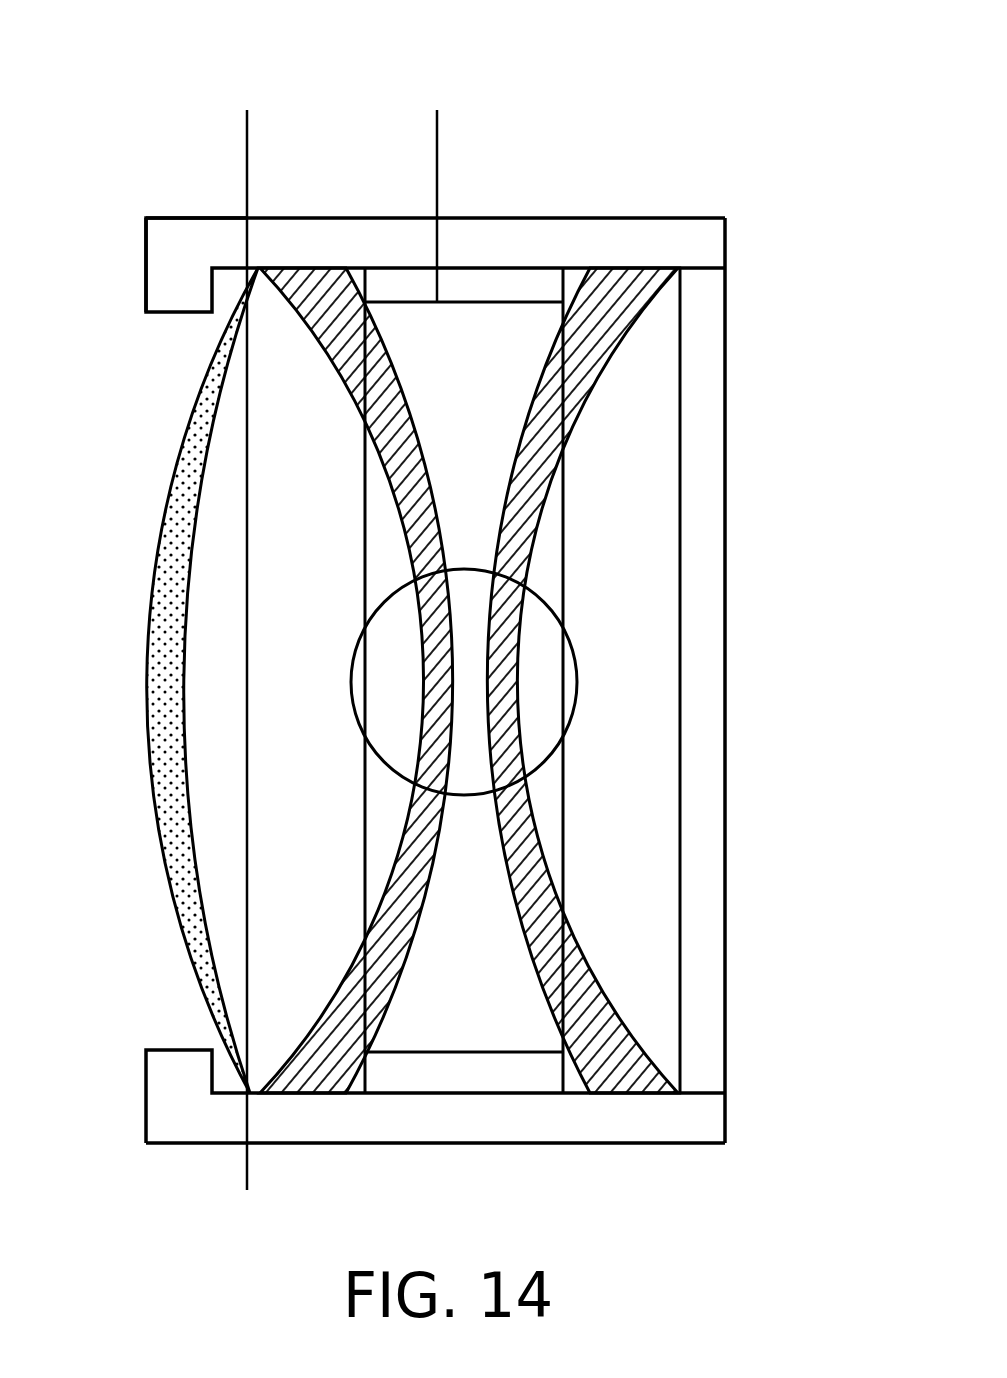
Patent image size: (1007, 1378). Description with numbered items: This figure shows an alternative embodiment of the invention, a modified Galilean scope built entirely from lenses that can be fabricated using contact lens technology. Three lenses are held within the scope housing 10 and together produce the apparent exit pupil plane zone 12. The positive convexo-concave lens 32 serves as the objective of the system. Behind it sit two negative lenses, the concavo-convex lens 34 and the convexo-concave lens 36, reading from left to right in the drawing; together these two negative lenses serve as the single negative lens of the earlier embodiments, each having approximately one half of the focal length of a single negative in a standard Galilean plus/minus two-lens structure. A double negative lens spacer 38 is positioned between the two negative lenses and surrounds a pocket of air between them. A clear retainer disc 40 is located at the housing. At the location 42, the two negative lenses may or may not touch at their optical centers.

The scope housing 10 is at (197, 213).
The apparent exit pupil plane zone 12 is at (435, 147).
The positive convexo-concave lens 32 is at (172, 450).
The negative concavo-convex lens 34 is at (390, 992).
The negative convexo-concave lens 36 is at (548, 838).
The double negative lens spacer 38 is at (641, 88).
The clear retainer disc 40 is at (727, 360).
The optical center contact location 42 is at (470, 668).